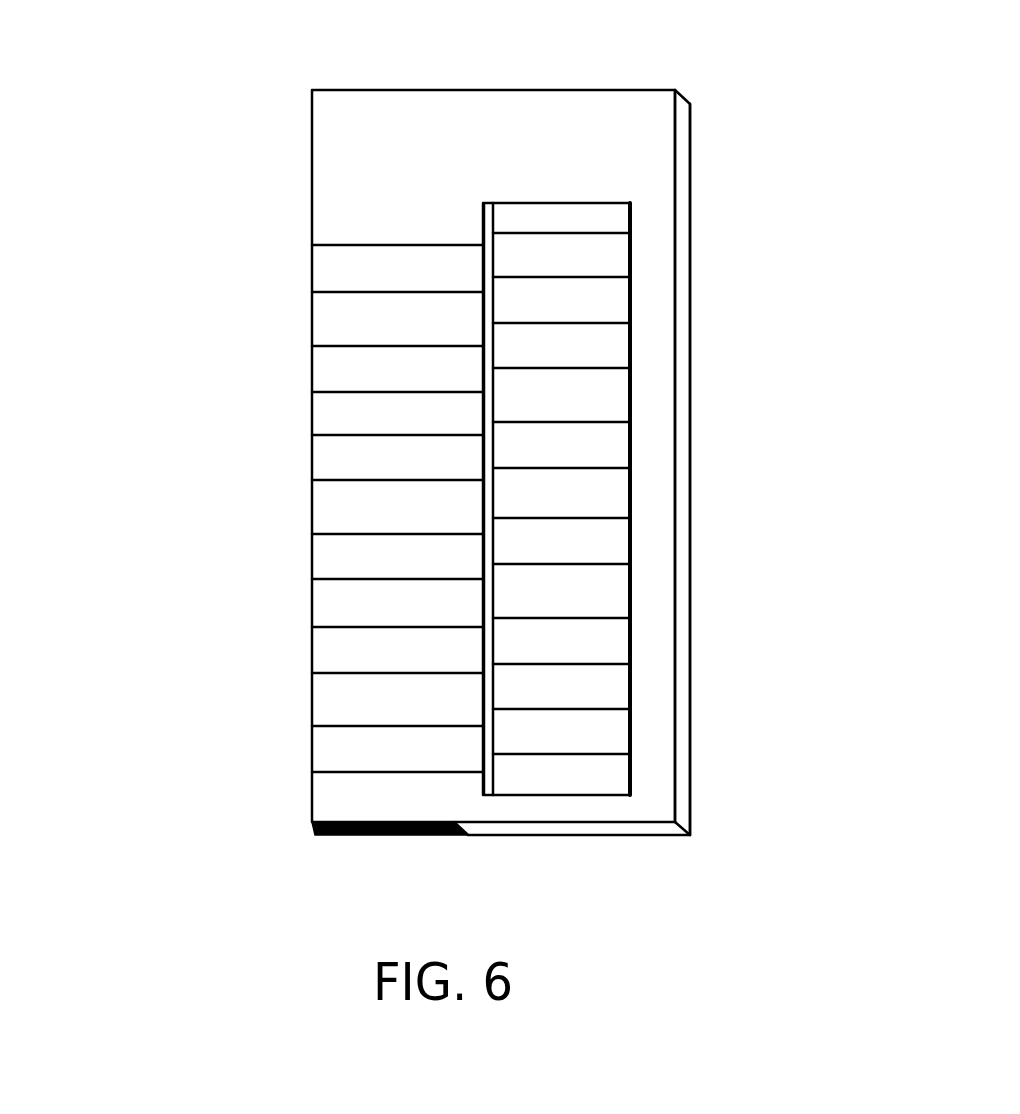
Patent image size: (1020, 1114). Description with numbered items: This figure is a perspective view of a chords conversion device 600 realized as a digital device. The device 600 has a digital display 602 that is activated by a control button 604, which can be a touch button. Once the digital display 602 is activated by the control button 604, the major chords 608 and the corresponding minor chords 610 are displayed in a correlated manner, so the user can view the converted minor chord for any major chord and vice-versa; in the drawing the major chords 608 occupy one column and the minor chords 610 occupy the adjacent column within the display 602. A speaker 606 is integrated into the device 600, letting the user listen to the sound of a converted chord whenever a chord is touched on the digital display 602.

The chords conversion device 600 is at (276, 138).
The digital display 602 is at (325, 173).
The control button 604 is at (630, 118).
The speaker 606 is at (680, 222).
The major chords 608 is at (292, 249).
The minor chords 610 is at (620, 810).